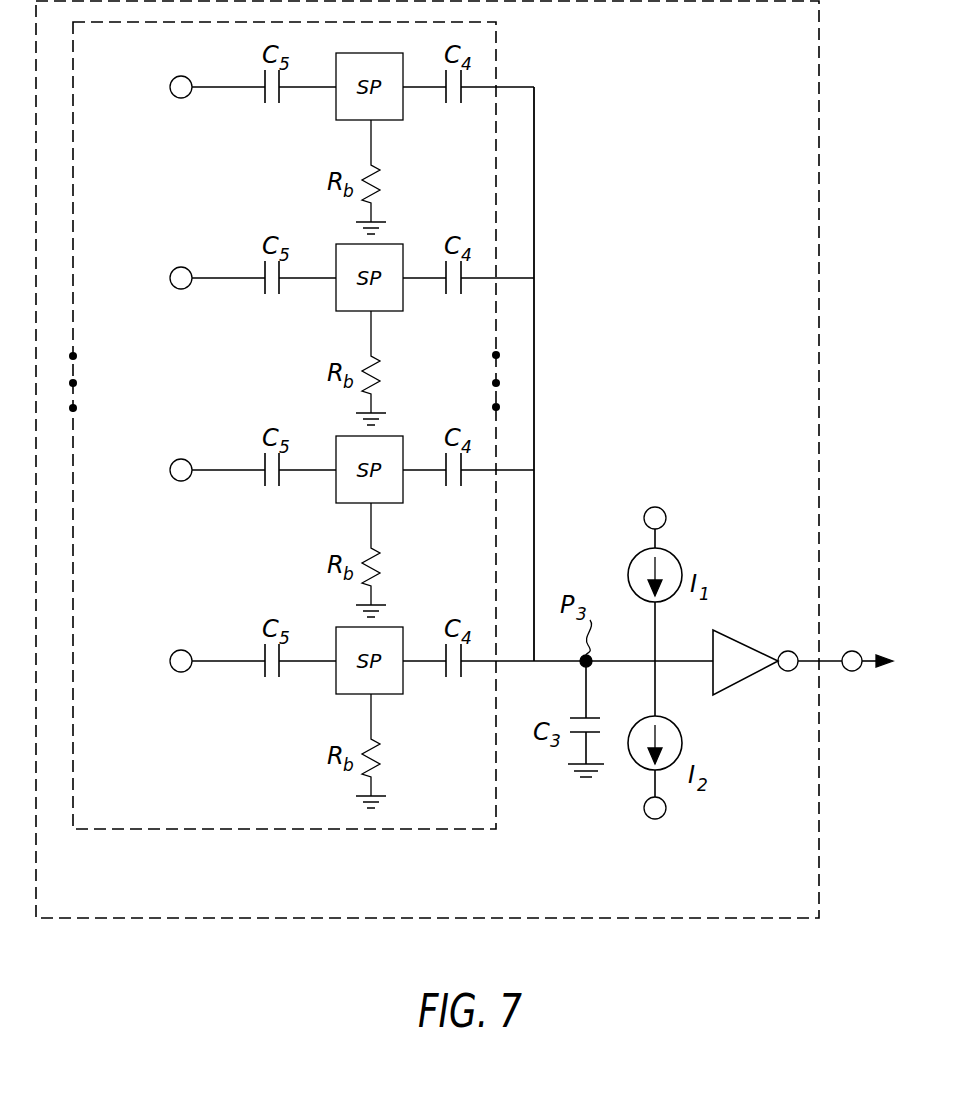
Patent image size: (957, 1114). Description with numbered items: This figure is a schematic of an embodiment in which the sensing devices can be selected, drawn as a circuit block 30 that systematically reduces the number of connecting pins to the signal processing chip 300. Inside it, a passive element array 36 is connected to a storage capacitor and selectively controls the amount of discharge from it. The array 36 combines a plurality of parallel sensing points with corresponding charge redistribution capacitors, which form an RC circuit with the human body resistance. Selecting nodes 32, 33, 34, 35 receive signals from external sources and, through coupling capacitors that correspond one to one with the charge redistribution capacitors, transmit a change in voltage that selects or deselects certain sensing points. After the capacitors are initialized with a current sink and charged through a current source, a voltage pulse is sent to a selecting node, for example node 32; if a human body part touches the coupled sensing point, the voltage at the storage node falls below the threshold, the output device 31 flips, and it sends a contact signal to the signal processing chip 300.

The receiver circuit block 30 is at (533, 918).
The output device 31 is at (752, 677).
The selecting node 32 is at (169, 87).
The selecting node 33 is at (169, 278).
The selecting node 34 is at (169, 470).
The selecting node 35 is at (169, 661).
The passive element array 36 is at (125, 829).
The signal processing chip 300 is at (852, 671).